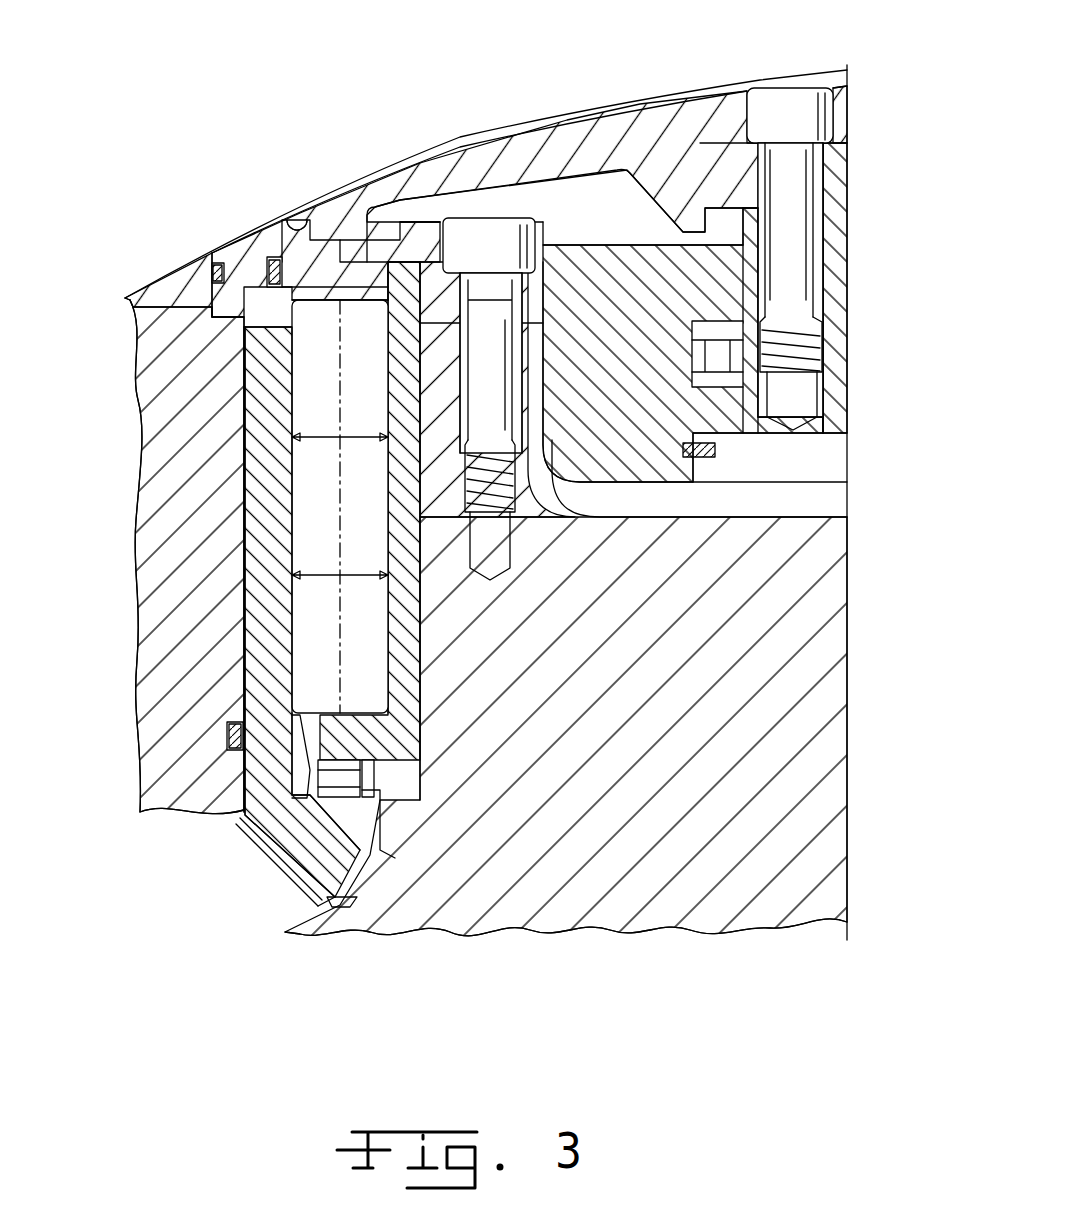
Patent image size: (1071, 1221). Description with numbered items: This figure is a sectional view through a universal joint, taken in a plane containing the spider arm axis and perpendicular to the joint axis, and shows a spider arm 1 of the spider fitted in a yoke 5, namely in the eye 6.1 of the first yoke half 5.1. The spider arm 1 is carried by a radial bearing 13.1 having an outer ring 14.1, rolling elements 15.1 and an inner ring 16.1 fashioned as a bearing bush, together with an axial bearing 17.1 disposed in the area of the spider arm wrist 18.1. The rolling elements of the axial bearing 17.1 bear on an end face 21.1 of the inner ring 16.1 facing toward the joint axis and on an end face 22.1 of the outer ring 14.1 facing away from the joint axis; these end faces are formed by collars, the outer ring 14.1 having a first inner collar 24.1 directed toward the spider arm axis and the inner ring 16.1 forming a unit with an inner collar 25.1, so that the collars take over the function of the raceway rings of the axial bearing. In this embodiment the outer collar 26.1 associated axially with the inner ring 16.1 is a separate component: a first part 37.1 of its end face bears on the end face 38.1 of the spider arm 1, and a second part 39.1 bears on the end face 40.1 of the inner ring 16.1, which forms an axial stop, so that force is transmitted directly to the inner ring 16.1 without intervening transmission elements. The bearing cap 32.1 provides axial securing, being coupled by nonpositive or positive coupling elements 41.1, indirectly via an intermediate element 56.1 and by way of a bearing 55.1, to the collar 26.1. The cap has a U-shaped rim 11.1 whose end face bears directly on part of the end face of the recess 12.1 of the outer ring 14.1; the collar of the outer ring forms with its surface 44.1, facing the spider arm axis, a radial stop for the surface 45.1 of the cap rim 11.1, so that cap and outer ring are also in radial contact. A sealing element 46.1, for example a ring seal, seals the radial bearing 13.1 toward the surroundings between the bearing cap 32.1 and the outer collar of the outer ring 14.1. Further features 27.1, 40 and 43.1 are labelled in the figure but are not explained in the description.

The spider arm 1 is at (748, 683).
The yoke 5 is at (150, 268).
The first yoke half 5.1 is at (178, 432).
The eye 6.1 is at (156, 557).
The U-shaped rim 11.1 is at (324, 303).
The recess 12.1 is at (212, 313).
The radial bearing 13.1 is at (242, 598).
The outer ring 14.1 is at (247, 660).
The rolling elements 15.1 is at (365, 429).
The inner ring 16.1 is at (402, 520).
The axial bearing 17.1 is at (300, 877).
The spider arm wrist 18.1 is at (393, 857).
The end face of the inner ring 21.1 is at (350, 750).
The end face of the outer ring 22.1 is at (268, 850).
The first inner collar 24.1 is at (330, 878).
The inner collar 25.1 is at (365, 738).
The outer collar 26.1 is at (650, 273).
The lower channel 27.1 is at (507, 483).
The bearing cap 32.1 is at (677, 172).
The first part of the end face 37.1 is at (543, 333).
The end face of the spider arm 38.1 is at (400, 372).
The second part of the end face 39.1 is at (420, 232).
The bore wall 40 is at (402, 308).
The end face of the inner ring 40.1 is at (375, 230).
The coupling elements 41.1 is at (803, 192).
The gland 43.1 is at (318, 250).
The surface of the collar 44.1 is at (300, 255).
The surface of the cap rim 45.1 is at (280, 250).
The sealing element 46.1 is at (240, 255).
The bearing 55.1 is at (716, 388).
The intermediate element 56.1 is at (833, 240).